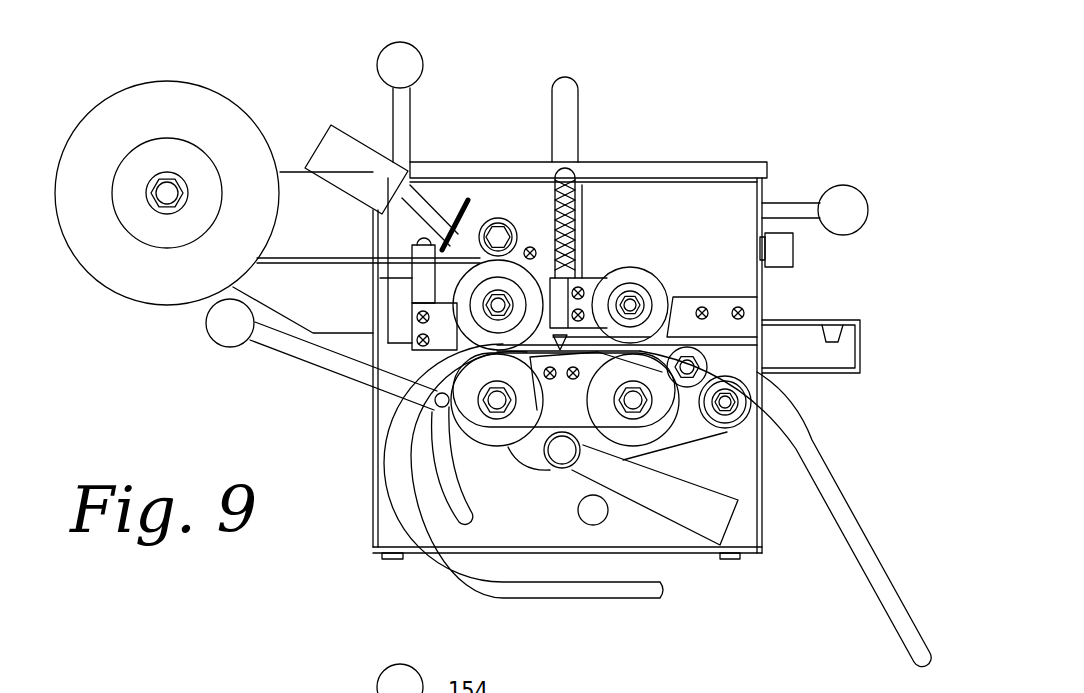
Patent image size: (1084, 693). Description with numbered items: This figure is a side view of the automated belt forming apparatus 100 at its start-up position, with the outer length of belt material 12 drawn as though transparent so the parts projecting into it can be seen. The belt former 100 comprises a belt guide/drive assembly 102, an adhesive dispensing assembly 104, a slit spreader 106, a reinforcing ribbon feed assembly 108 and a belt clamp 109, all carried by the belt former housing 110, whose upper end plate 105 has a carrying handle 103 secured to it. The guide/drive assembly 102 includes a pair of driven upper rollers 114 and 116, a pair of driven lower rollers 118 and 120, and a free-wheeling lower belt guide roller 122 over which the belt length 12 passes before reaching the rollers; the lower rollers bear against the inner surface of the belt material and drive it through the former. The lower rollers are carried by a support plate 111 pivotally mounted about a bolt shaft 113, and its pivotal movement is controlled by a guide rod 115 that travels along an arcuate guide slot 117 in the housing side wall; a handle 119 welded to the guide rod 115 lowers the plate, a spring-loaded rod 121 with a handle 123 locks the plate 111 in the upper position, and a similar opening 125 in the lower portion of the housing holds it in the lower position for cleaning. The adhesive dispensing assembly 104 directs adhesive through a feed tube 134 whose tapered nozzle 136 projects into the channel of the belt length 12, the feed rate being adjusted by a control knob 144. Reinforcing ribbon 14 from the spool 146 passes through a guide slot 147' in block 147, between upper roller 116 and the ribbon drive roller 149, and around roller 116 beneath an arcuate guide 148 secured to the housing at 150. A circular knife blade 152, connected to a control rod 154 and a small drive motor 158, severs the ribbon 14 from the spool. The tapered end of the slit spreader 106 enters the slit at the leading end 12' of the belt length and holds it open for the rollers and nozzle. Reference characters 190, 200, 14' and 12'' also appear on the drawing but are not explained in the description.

The belt forming apparatus 100 is at (738, 143).
The upper end plate 105 is at (702, 162).
The spool 146 is at (222, 97).
The reinforcing ribbon feed assembly 108 is at (290, 137).
The reinforcing ribbon 14 is at (368, 233).
The drive motor 158 is at (363, 148).
The control rod 154 is at (407, 107).
The circular knife blade 152 is at (451, 192).
The block 147 is at (390, 294).
The guide slot 147' is at (356, 292).
The ribbon drive roller 149 is at (496, 220).
The securing location 150 is at (530, 246).
The upper roller 116 is at (475, 278).
The carrying handle 103 is at (573, 103).
The feed tube 134 is at (578, 223).
The adhesive dispensing assembly 104 is at (588, 197).
The arcuate guide 148 is at (522, 283).
The upper roller 114 is at (653, 275).
The belt guide/drive assembly 102 is at (642, 248).
The slit spreader 106 is at (668, 340).
The handle rod 190 is at (793, 205).
The knob 200 is at (843, 195).
The control knob 144 is at (793, 252).
The belt clamp 109 is at (822, 323).
The fed wire 14' is at (627, 384).
The tapered nozzle 136 is at (563, 343).
The lower roller 120 is at (485, 432).
The handle 119 is at (337, 365).
The guide rod 115 is at (438, 396).
The arcuate guide slot 117 is at (440, 475).
The opening 125 is at (596, 525).
The leading end 12' is at (680, 630).
The support plate 111 is at (508, 452).
The spring-loaded rod 121 is at (556, 463).
The handle 123 is at (673, 503).
The lower roller 118 is at (625, 460).
The belt guide roller 122 is at (673, 390).
The bolt shaft 113 is at (733, 409).
The outer length of belt material 12 is at (785, 509).
The conduit outlet end 12'' is at (877, 658).
The belt former housing 110 is at (758, 493).